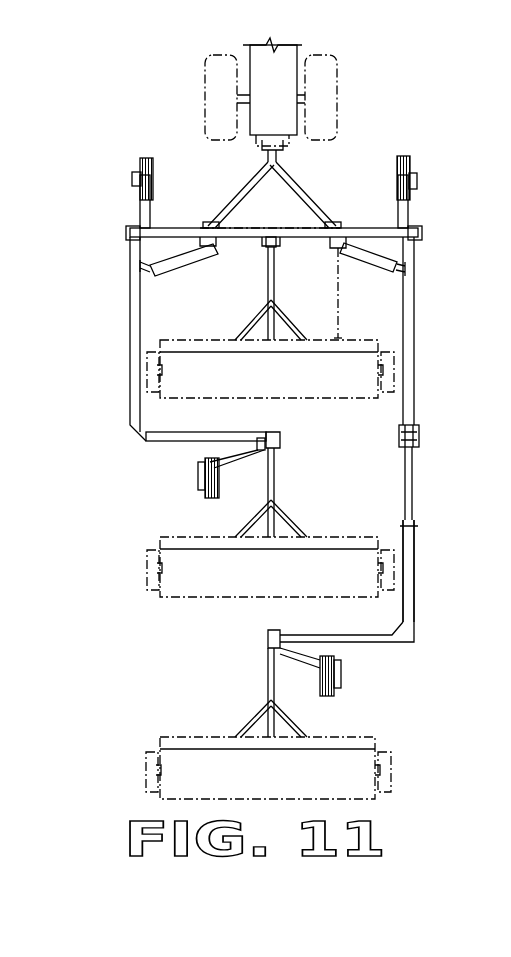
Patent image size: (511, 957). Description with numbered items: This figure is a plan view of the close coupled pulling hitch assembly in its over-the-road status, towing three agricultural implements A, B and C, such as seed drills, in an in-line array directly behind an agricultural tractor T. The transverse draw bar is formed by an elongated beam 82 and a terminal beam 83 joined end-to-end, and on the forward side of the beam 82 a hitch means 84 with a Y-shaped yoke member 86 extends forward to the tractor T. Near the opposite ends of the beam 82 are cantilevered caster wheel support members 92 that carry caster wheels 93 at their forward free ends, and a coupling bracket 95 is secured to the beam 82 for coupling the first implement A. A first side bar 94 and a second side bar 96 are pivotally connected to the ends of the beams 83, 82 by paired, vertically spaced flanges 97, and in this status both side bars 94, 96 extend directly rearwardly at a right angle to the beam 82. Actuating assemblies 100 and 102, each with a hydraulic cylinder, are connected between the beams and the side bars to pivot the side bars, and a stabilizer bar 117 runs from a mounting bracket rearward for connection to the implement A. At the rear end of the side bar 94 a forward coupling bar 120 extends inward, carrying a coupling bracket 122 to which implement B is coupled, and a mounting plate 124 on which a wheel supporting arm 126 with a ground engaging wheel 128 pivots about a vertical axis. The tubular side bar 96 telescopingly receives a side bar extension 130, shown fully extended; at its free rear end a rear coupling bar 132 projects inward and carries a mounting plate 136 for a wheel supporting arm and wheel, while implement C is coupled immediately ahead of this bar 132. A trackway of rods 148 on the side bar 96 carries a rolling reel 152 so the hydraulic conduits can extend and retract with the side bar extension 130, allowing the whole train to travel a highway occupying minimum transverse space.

The agricultural tractor T is at (278, 66).
The elongated beam 82 is at (296, 246).
The terminal beam 83 is at (166, 228).
The hitch means 84 is at (314, 200).
The Y-shaped yoke member 86 is at (254, 186).
The caster wheel support members 92 is at (140, 210).
The caster wheels 93 is at (140, 160).
The first side bar 94 is at (130, 320).
The coupling bracket 95 is at (266, 243).
The second side bar 96 is at (414, 276).
The flanges 97 is at (126, 233).
The actuating assembly 100 is at (186, 268).
The actuating assembly 102 is at (374, 262).
The stabilizer bar 117 is at (337, 290).
The forward coupling bar 120 is at (186, 430).
The coupling bracket 122 is at (268, 440).
The mounting plate 124 is at (226, 440).
The wheel supporting arm 126 is at (208, 455).
The ground engaging wheel 128 is at (205, 492).
The side bar extension 130 is at (414, 550).
The rear coupling bar 132 is at (366, 642).
The mounting plate 136 is at (328, 632).
The rods 148 is at (414, 362).
The reel 152 is at (424, 432).
The agricultural implement A is at (328, 384).
The agricultural implement B is at (228, 580).
The agricultural implement C is at (214, 764).